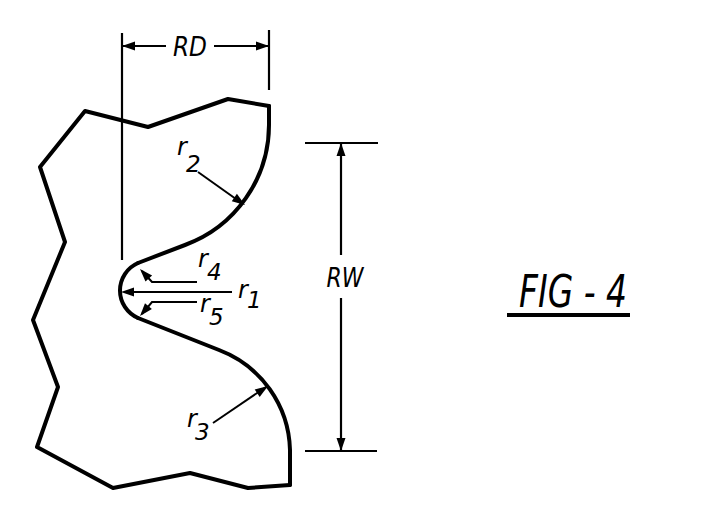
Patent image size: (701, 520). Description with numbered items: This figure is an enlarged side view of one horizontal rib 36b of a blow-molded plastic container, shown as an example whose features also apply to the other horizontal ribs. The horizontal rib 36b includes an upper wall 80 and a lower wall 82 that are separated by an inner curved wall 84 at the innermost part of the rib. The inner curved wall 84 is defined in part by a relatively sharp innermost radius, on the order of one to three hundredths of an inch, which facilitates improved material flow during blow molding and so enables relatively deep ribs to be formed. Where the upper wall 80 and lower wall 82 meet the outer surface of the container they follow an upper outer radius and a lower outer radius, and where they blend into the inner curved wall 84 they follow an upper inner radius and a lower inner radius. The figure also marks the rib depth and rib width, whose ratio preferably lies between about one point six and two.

The horizontal rib 36b is at (255, 293).
The upper wall 80 is at (183, 245).
The lower wall 82 is at (200, 343).
The inner curved wall 84 is at (118, 303).